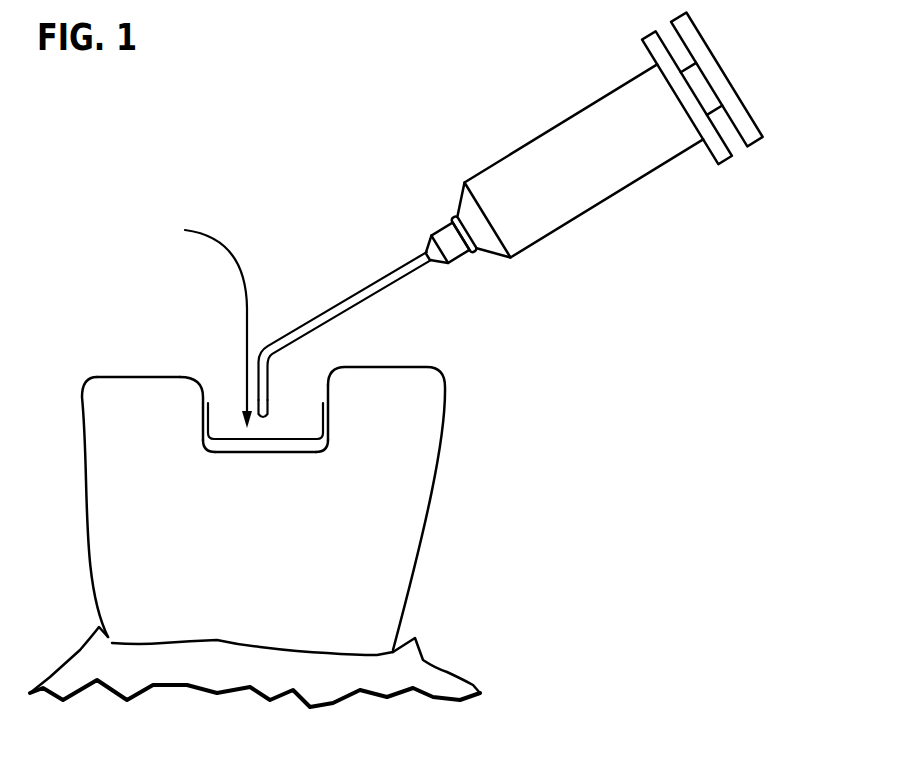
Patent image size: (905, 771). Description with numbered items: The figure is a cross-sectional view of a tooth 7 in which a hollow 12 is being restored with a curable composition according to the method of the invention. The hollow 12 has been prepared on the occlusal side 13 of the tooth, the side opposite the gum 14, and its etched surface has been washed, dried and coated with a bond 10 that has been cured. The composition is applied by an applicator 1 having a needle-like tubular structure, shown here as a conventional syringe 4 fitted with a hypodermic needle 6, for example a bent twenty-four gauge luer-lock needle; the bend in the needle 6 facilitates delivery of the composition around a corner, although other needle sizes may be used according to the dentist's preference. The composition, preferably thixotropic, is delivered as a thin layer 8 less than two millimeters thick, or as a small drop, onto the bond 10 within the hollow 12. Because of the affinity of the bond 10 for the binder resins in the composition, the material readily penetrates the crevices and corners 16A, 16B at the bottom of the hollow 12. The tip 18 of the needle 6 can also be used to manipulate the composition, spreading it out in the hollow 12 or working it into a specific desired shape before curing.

The applicator 1 is at (680, 222).
The syringe 4 is at (558, 248).
The needle 6 is at (323, 304).
The tooth 7 is at (425, 512).
The thin layer 8 is at (297, 437).
The bond 10 is at (207, 398).
The hollow 12 is at (203, 322).
The occlusal side 13 is at (138, 371).
The gum 14 is at (428, 650).
The corner 16A is at (210, 455).
The corner 16B is at (329, 452).
The tip 18 is at (262, 421).